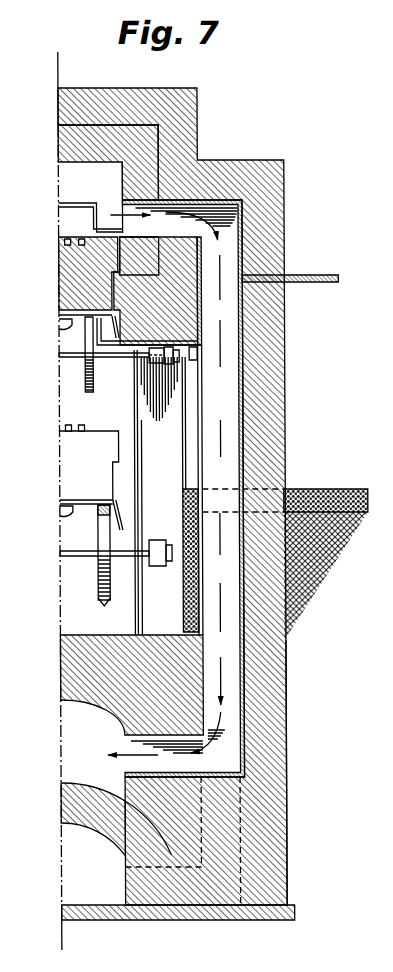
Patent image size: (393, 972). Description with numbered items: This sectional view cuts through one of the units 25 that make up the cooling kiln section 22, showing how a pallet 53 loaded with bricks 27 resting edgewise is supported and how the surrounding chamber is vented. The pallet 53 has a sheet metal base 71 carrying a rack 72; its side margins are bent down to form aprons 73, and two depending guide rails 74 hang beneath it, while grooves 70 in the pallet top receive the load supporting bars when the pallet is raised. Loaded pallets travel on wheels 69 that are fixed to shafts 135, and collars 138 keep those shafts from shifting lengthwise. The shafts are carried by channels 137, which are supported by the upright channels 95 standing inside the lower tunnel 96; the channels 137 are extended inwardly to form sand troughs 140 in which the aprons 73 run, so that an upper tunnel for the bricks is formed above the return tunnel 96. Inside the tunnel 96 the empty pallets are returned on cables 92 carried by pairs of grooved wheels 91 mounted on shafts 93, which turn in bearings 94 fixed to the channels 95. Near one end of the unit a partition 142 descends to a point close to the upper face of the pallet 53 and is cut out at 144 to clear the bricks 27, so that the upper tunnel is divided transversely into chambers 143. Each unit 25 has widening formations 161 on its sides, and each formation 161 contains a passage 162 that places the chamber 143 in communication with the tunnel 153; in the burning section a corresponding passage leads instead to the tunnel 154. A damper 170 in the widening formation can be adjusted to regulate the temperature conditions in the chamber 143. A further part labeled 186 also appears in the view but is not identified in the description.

The kiln section 22 is at (198, 86).
The unit 25 is at (157, 88).
The bricks 27 is at (104, 279).
The pallet 53 is at (68, 253).
The wheels 69 is at (82, 390).
The grooves 70 is at (82, 240).
The sheet metal base 71 is at (68, 500).
The rack 72 is at (62, 322).
The aprons 73 is at (116, 509).
The guide rails 74 is at (62, 428).
The grooved wheels 91 is at (97, 579).
The cables 92 is at (104, 505).
The shafts 93 is at (70, 557).
The bearings 94 is at (158, 540).
The channels 95 is at (134, 420).
The tunnel 96 is at (122, 478).
The shafts 135 is at (62, 366).
The channels 137 is at (72, 308).
The collars 138 is at (170, 360).
The sand troughs 140 is at (131, 364).
The partition 142 is at (62, 168).
The chambers 143 is at (82, 170).
The cutouts 144 is at (66, 206).
The tunnel 153 is at (78, 720).
The tunnel 154 is at (75, 877).
The widening formations 161 is at (282, 697).
The passage 162 is at (230, 662).
The dampers 170 is at (320, 274).
The block 186 is at (150, 364).